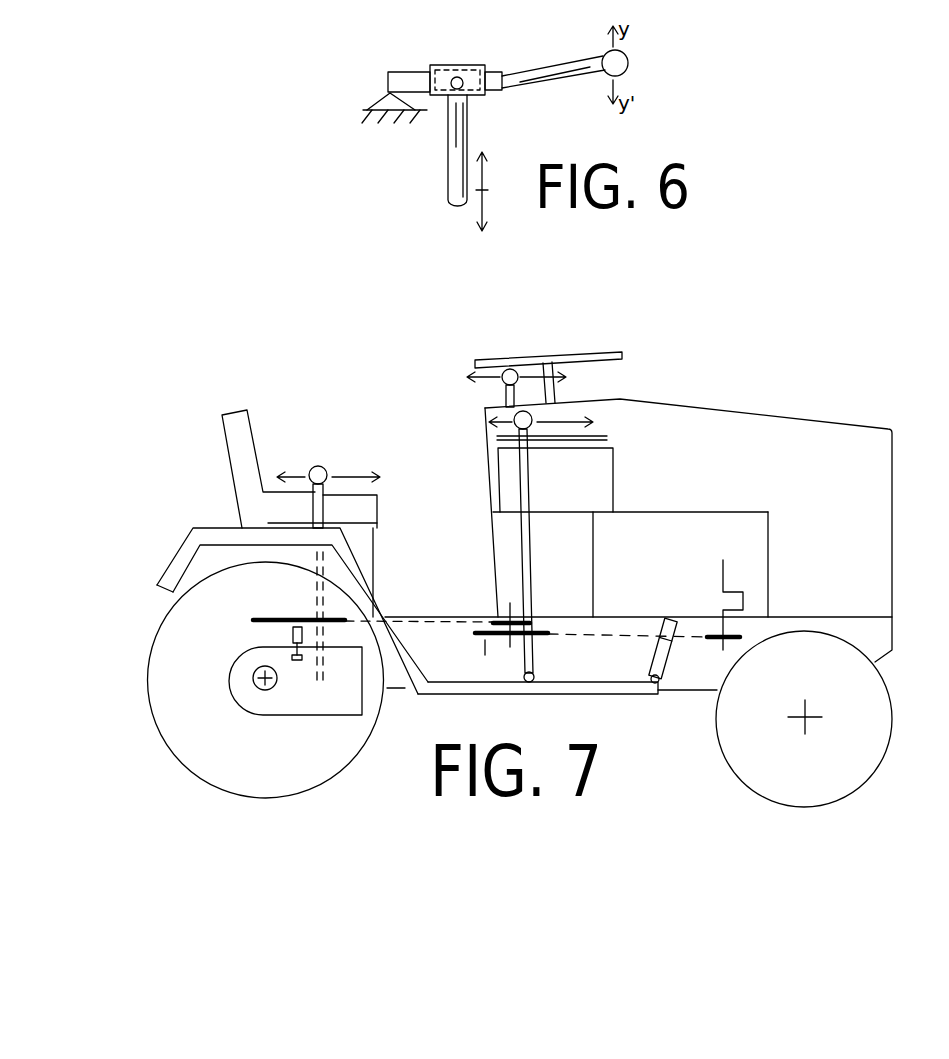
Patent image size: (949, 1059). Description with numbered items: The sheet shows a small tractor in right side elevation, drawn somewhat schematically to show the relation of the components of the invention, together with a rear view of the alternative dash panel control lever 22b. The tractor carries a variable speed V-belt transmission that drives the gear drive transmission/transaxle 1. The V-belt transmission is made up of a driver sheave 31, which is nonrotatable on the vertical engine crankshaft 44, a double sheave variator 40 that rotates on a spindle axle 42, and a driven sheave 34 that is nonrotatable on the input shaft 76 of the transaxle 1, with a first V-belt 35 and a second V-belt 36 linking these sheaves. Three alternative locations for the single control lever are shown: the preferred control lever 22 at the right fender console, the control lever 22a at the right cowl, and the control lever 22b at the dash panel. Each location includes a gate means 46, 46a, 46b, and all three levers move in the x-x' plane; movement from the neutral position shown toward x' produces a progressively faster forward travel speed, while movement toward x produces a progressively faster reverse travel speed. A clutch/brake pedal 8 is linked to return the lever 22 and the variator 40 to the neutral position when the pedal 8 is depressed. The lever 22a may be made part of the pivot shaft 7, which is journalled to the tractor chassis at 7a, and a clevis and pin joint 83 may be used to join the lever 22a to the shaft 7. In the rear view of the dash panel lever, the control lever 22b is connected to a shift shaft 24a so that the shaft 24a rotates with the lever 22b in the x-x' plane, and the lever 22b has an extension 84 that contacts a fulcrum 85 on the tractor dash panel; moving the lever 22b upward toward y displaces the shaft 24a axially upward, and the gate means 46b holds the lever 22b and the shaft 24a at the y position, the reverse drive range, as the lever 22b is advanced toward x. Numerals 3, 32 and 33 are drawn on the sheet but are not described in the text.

In FIG. 7, the gear drive transmission/transaxle 1 is at (343, 703).
In FIG. 7, the rear axle 3 is at (272, 685).
In FIG. 7, the pivot shaft 7 is at (681, 682).
In FIG. 7, the chassis journal 7a is at (533, 671).
In FIG. 7, the clutch/brake pedal 8 is at (668, 620).
In FIG. 7, the control lever 22 is at (322, 507).
In FIG. 7, the control lever 22a is at (528, 472).
In FIG. 6, the control lever 22b is at (530, 83).
In FIG. 7, the control lever 22b is at (506, 395).
In FIG. 6, the shift shaft 24a is at (455, 202).
In FIG. 7, the driver sheave 31 is at (710, 648).
In FIG. 7, the link 32 is at (488, 640).
In FIG. 7, the pivot arm 33 is at (497, 612).
In FIG. 7, the driven sheave 34 is at (287, 610).
In FIG. 7, the first V-belt 35 is at (630, 637).
In FIG. 7, the second V-belt 36 is at (424, 628).
In FIG. 7, the double sheave variator 40 is at (533, 653).
In FIG. 7, the spindle axle 42 is at (515, 607).
In FIG. 7, the vertical engine crankshaft 44 is at (720, 611).
In FIG. 7, the gate means 46 is at (374, 545).
In FIG. 7, the gate means 46a is at (597, 443).
In FIG. 7, the gate means 46b is at (552, 392).
In FIG. 7, the transaxle input shaft 76 is at (293, 637).
In FIG. 6, the clevis and pin joint 83 is at (473, 88).
In FIG. 6, the extension 84 is at (396, 75).
In FIG. 6, the fulcrum 85 is at (385, 102).